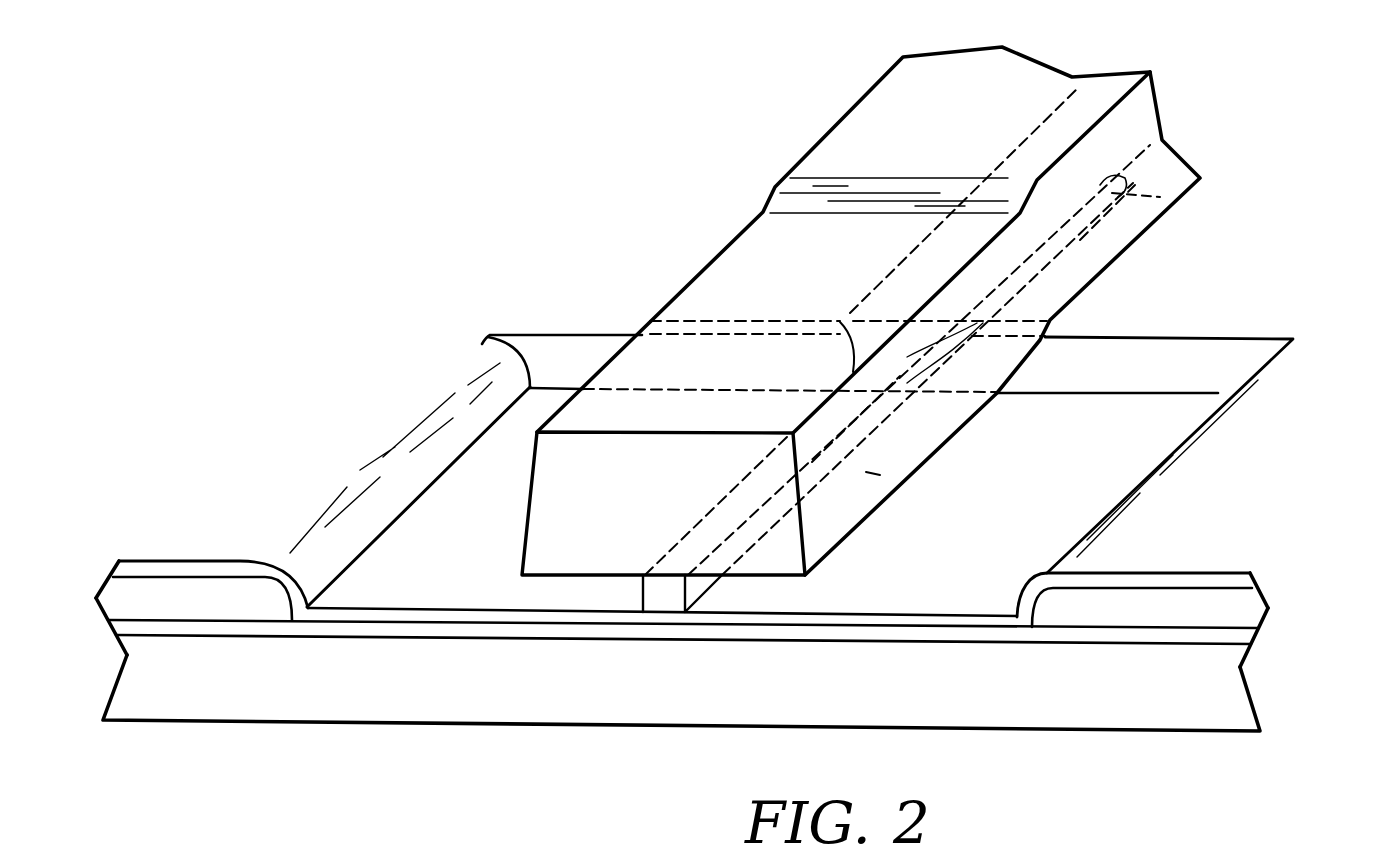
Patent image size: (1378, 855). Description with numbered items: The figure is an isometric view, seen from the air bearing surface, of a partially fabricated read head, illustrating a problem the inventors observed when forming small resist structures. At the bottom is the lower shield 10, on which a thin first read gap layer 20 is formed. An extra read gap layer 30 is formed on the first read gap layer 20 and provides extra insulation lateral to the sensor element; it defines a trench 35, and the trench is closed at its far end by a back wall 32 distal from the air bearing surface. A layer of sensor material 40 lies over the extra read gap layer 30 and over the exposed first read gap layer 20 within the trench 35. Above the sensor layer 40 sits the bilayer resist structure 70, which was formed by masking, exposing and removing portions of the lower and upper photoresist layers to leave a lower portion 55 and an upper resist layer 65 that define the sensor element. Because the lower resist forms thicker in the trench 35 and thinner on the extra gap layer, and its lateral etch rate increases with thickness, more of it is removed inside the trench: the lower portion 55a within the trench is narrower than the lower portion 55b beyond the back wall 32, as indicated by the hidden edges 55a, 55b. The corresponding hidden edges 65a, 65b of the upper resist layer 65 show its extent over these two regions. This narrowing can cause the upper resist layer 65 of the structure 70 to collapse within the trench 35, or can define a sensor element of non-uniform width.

The lower shield 10 is at (1240, 697).
The first read gap layer 20 is at (1240, 638).
The extra read gap layer 30 is at (1245, 614).
The back wall 32 is at (1208, 358).
The trench 35 is at (383, 593).
The sensor layer 40 is at (1247, 575).
The lower portion of the resist structure 55 is at (630, 592).
The lower portion of the resist structure in the trench 55a is at (870, 473).
The lower portion of the resist structure beyond the back wall 55b is at (1160, 197).
The upper resist layer 65 is at (541, 560).
The upper resist layer portion in the trench 65a is at (858, 513).
The upper resist layer portion beyond the back wall 65b is at (1112, 227).
The bilayer resist structure 70 is at (885, 107).